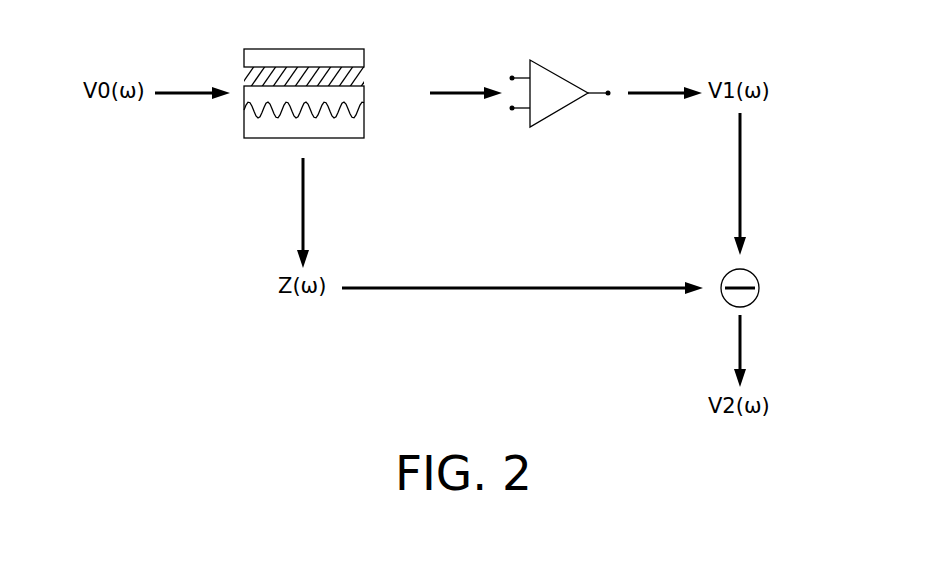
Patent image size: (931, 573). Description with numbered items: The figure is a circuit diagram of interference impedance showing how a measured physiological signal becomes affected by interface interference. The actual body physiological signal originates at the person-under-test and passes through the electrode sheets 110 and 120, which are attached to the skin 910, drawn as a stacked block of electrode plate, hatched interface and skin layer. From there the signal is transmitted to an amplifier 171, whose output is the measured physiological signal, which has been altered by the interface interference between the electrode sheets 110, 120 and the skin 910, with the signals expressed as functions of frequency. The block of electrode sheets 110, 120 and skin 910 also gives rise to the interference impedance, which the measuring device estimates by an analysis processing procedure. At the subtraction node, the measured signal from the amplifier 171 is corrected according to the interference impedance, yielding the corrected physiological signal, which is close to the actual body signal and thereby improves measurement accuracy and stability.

The electrode sheet 110 is at (337, 54).
The electrode sheet 120 is at (328, 48).
The skin 910 is at (364, 89).
The amplifier 171 is at (563, 73).